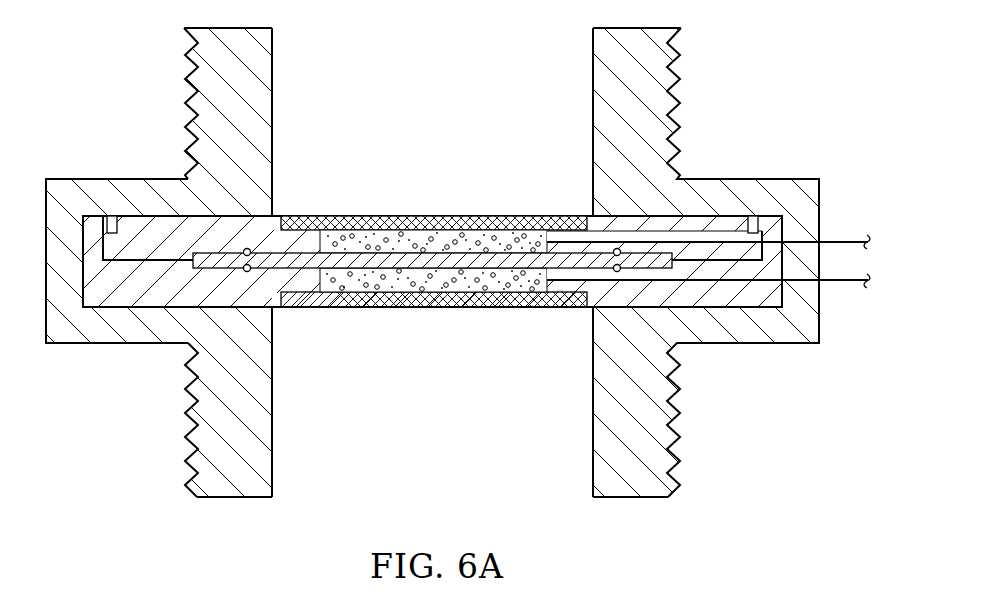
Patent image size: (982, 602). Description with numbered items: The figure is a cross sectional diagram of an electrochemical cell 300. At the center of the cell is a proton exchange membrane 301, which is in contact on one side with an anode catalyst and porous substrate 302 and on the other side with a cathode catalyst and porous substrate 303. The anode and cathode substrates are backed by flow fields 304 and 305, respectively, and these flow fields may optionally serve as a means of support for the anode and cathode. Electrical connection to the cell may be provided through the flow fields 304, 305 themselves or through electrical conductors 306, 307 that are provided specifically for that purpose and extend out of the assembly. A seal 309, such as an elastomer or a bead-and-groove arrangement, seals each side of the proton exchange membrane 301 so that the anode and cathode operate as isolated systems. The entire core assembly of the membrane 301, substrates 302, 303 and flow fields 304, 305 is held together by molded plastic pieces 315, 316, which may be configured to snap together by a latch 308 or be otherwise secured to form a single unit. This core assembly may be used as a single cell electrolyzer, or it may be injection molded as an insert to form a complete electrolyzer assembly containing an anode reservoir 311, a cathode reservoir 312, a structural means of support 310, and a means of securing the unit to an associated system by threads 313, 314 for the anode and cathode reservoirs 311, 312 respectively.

The electrochemical cell 300 is at (491, 301).
The proton exchange membrane 301 is at (308, 275).
The anode catalyst and porous substrate 302 is at (382, 216).
The cathode catalyst and porous substrate 303 is at (392, 307).
The anode flow field 304 is at (478, 216).
The cathode flow field 305 is at (494, 307).
The electrical conductor 306 is at (836, 283).
The electrical conductor 307 is at (836, 240).
The latch 308 is at (104, 216).
The seal 309 is at (247, 249).
The structural means of support 310 is at (272, 68).
The anode reservoir 311 is at (450, 124).
The cathode reservoir 312 is at (452, 432).
The threads 313 is at (190, 70).
The threads 314 is at (187, 443).
The molded plastic piece 315 is at (183, 214).
The molded plastic piece 316 is at (138, 310).